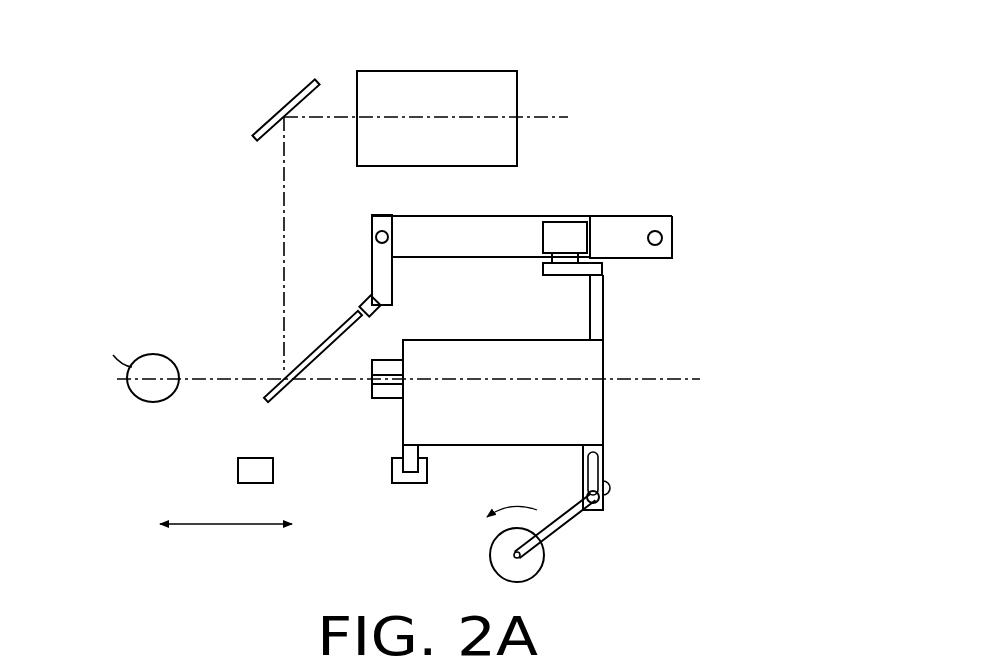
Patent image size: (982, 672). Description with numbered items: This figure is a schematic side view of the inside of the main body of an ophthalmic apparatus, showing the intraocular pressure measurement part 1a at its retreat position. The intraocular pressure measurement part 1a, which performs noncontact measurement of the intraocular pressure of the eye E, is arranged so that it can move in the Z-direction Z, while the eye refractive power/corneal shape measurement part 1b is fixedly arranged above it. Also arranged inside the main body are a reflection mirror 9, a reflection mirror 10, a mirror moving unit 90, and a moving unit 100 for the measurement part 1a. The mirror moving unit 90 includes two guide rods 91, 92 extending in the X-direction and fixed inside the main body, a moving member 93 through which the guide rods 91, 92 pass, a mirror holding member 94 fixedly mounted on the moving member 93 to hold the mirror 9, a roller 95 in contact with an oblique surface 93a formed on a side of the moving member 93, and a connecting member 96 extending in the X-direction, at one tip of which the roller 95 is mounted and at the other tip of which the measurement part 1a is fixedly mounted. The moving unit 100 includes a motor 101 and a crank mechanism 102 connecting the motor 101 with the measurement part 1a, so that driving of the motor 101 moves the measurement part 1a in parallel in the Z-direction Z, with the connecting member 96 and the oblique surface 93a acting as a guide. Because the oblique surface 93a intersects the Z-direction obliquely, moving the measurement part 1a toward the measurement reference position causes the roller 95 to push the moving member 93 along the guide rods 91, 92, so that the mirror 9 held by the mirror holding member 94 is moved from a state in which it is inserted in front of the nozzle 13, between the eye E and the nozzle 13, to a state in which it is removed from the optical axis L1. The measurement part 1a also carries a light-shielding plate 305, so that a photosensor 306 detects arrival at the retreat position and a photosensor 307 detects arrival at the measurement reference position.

The reflection mirror 10 is at (300, 100).
The eye refractive power/corneal shape measurement part 1b is at (437, 70).
The mirror moving unit 90 is at (676, 181).
The guide rod 91 is at (377, 232).
The guide rod 92 is at (657, 228).
The moving member 93 is at (443, 215).
The oblique surface 93a is at (468, 237).
The mirror holding member 94 is at (365, 297).
The roller 95 is at (565, 235).
The connecting member 96 is at (597, 327).
The eye E is at (113, 382).
The reflection mirror 9 is at (300, 368).
The nozzle 13 is at (390, 388).
The intraocular pressure measurement part 1a is at (603, 405).
The light-shielding plate 305 is at (393, 460).
The photosensor 306 is at (398, 478).
The photosensor 307 is at (242, 463).
The optical axis L1 is at (470, 382).
The Z-direction Z is at (226, 503).
The moving unit 100 is at (654, 517).
The motor 101 is at (540, 563).
The crank mechanism 102 is at (620, 513).